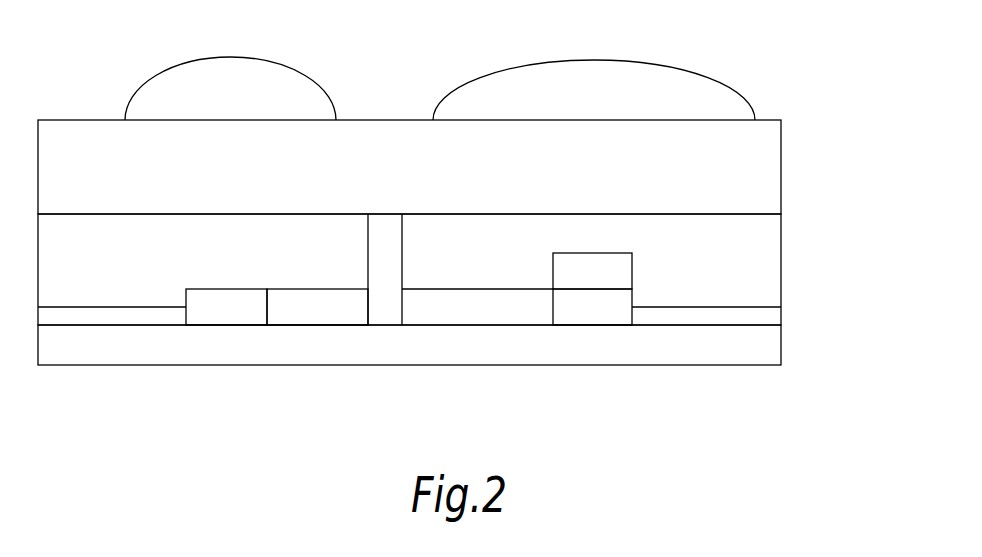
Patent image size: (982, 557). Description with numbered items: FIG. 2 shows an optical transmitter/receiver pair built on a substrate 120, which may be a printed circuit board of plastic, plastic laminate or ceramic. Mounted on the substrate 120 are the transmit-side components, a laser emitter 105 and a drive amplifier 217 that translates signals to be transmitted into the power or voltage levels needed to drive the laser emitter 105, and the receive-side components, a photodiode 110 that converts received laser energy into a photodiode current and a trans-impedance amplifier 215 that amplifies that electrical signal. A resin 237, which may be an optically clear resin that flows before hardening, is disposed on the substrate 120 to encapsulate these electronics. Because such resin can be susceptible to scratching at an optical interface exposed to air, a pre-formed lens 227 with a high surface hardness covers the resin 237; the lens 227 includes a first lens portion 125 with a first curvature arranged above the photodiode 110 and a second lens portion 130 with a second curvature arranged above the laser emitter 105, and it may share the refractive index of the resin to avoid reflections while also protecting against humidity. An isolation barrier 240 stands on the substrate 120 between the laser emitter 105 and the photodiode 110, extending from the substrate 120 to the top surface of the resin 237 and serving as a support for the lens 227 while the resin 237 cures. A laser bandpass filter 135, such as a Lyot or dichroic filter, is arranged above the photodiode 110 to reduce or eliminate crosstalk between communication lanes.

The laser emitter 105 is at (215, 313).
The photodiode 110 is at (592, 317).
The substrate 120 is at (782, 343).
The first lens portion 125 is at (596, 60).
The second lens portion 130 is at (233, 59).
The laser bandpass filter 135 is at (633, 271).
The trans-impedance amplifier 215 is at (477, 314).
The drive amplifier 217 is at (330, 314).
The lens 227 is at (782, 137).
The resin 237 is at (782, 232).
The isolation barrier 240 is at (383, 315).